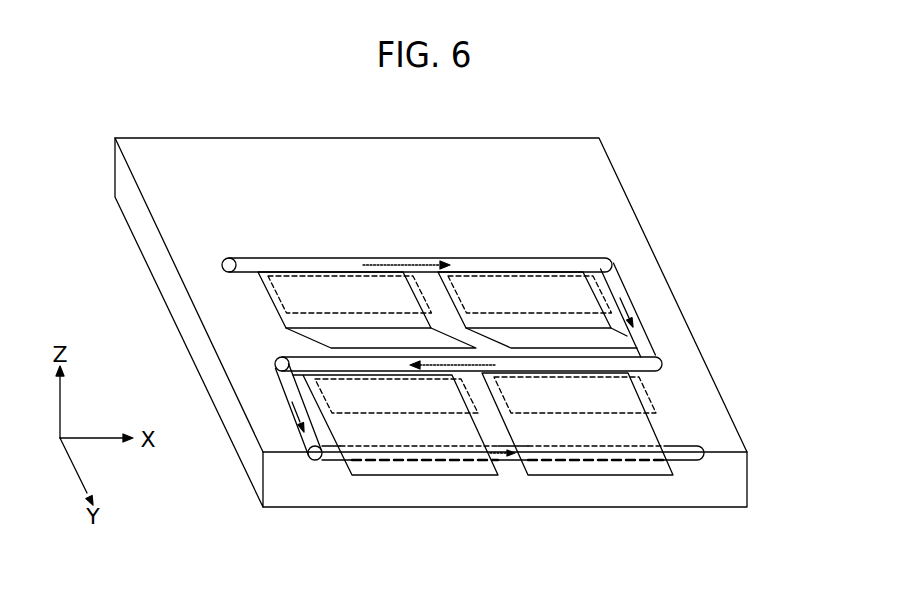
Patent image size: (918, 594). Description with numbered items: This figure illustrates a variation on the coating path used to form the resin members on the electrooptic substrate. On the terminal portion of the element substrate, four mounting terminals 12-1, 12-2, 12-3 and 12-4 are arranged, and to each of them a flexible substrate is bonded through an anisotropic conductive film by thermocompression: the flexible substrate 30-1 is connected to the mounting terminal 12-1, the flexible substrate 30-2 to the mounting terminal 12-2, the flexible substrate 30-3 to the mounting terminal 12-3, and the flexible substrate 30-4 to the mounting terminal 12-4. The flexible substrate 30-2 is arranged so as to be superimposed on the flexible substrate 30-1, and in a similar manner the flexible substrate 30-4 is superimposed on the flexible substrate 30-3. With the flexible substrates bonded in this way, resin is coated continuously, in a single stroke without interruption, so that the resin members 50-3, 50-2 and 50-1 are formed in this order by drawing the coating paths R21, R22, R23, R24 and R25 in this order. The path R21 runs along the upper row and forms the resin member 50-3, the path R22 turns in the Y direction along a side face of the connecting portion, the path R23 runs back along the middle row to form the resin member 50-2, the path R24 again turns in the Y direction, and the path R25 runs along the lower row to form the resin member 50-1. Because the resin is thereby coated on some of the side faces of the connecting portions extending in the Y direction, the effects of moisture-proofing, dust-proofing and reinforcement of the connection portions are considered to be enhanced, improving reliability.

The mounting terminal 12-1 is at (310, 380).
The mounting terminal 12-2 is at (269, 289).
The mounting terminal 12-3 is at (620, 398).
The mounting terminal 12-4 is at (588, 282).
The flexible substrate 30-1 is at (413, 478).
The flexible substrate 30-2 is at (287, 328).
The flexible substrate 30-3 is at (652, 430).
The flexible substrate 30-4 is at (447, 300).
The resin member 50-1 is at (496, 475).
The resin member 50-2 is at (548, 363).
The resin member 50-3 is at (417, 249).
The coating path R21 is at (452, 258).
The coating path R22 is at (627, 292).
The coating path R23 is at (658, 364).
The coating path R24 is at (303, 422).
The coating path R25 is at (325, 460).